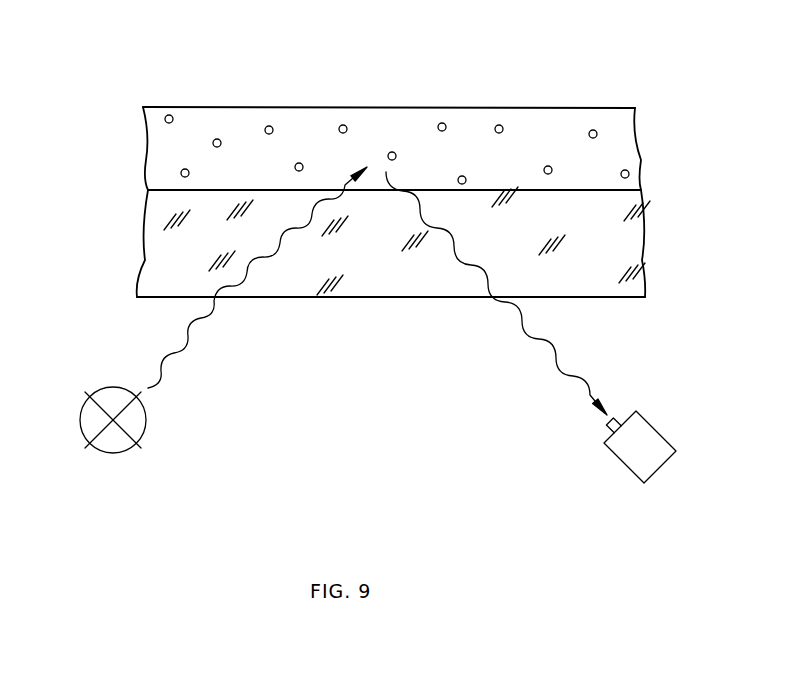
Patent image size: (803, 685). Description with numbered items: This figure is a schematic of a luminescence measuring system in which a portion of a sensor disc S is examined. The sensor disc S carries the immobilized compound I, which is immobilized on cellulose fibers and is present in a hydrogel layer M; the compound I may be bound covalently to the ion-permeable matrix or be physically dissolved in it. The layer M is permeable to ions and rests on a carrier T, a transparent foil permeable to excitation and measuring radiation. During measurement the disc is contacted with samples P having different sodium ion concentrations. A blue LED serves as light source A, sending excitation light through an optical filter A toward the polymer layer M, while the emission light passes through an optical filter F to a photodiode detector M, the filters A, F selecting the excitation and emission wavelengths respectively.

The sensor disc portion S is at (149, 82).
The sample P is at (380, 62).
The hydrogel layer M is at (613, 160).
The immobilized compound I is at (268, 126).
The carrier T is at (620, 242).
The light source A is at (153, 323).
The optical filter F is at (567, 328).
The light source L is at (140, 440).